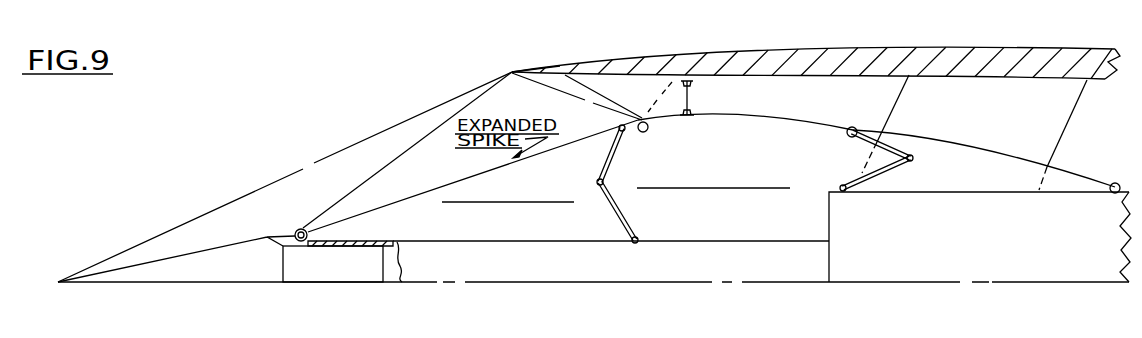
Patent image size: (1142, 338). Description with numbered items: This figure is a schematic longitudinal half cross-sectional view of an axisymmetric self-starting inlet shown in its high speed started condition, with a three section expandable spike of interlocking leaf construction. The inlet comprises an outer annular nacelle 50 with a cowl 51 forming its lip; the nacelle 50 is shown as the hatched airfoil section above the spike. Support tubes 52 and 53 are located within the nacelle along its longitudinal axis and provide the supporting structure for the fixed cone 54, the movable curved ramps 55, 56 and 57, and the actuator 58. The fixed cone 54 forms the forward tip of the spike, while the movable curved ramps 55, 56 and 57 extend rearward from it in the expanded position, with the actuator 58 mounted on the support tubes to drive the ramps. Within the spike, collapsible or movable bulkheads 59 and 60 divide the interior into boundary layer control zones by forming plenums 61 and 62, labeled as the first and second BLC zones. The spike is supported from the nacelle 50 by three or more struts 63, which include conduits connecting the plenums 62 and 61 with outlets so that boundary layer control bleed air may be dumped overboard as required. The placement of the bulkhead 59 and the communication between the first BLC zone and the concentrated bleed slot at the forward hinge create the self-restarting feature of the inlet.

The outer annular nacelle 50 is at (962, 47).
The cowl 51 is at (572, 33).
The support tube 52 is at (800, 241).
The support tube 53 is at (944, 197).
The fixed cone 54 is at (182, 254).
The movable curved ramp 55 is at (440, 184).
The movable curved ramp 56 is at (772, 118).
The movable curved ramp 57 is at (925, 137).
The actuator 58 is at (335, 273).
The collapsible bulkhead 59 is at (615, 213).
The collapsible bulkhead 60 is at (853, 185).
The plenum 61 is at (515, 231).
The plenum 62 is at (731, 223).
The strut 63 is at (1065, 135).